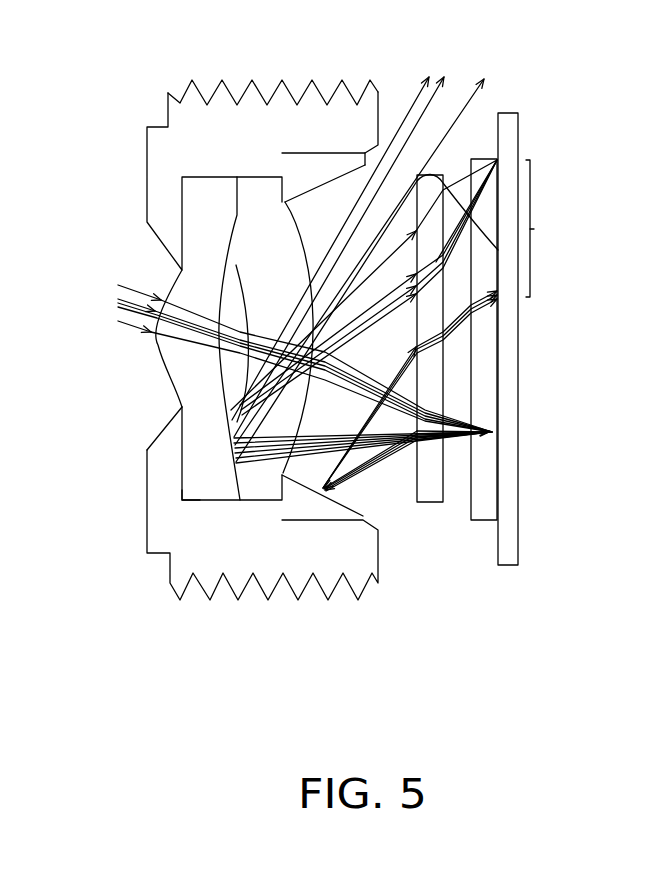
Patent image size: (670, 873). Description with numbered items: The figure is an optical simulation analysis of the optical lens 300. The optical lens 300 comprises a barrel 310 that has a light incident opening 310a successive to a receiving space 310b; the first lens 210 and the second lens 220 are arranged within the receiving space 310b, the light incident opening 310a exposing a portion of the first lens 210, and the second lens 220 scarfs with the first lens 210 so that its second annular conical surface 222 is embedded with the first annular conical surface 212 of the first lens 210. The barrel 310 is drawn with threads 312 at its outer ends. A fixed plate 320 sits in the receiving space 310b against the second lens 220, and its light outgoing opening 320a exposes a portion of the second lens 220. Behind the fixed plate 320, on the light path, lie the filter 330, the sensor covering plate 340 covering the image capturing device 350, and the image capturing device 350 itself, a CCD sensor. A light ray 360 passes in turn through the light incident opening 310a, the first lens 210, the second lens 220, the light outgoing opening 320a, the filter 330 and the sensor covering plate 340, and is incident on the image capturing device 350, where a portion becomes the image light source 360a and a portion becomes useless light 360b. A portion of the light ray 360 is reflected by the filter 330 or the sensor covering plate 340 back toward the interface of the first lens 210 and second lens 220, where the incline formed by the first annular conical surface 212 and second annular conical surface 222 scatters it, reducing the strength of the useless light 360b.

The optical lens 300 is at (652, 728).
The barrel 310 is at (210, 364).
The light incident opening 310a is at (161, 425).
The receiving space 310b is at (192, 496).
The threads of barrel 312 is at (231, 98).
The first lens 210 is at (230, 366).
The first annular conical surface 212 is at (241, 194).
The second lens 220 is at (237, 364).
The second annular conical surface 222 is at (233, 216).
The fixed plate 320 is at (329, 364).
The light outgoing opening 320a is at (317, 189).
The filter 330 is at (430, 478).
The sensor covering plate 340 is at (485, 508).
The image capturing device 350 is at (507, 557).
The light ray 360 is at (130, 328).
The image light source 360a is at (497, 433).
The useless light 360b is at (406, 282).